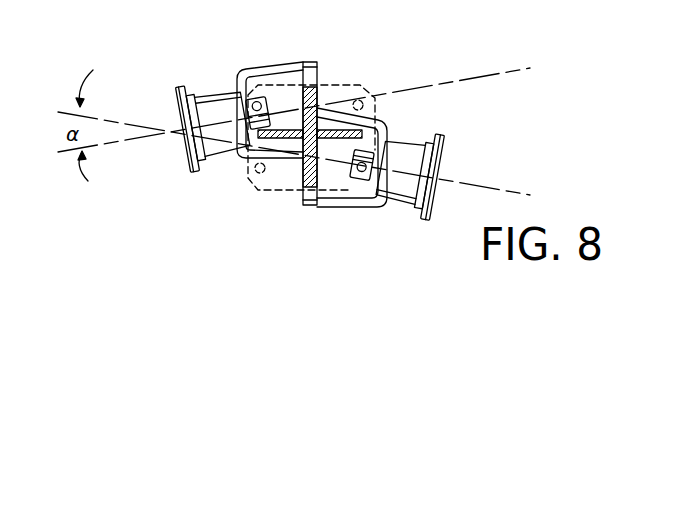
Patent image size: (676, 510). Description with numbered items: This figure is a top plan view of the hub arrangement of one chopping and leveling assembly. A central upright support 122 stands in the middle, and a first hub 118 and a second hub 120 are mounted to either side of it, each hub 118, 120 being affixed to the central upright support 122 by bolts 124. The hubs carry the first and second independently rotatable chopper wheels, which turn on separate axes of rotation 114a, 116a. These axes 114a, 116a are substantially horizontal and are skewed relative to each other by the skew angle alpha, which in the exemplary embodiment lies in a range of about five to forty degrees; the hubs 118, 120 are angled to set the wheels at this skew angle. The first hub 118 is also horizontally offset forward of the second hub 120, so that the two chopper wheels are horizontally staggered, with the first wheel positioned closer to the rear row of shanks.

The axis of rotation 114a is at (497, 75).
The axis of rotation 116a is at (497, 188).
The first hub 118 is at (190, 168).
The second hub 120 is at (442, 138).
The central upright support 122 is at (315, 78).
The bolts 124 is at (268, 103).